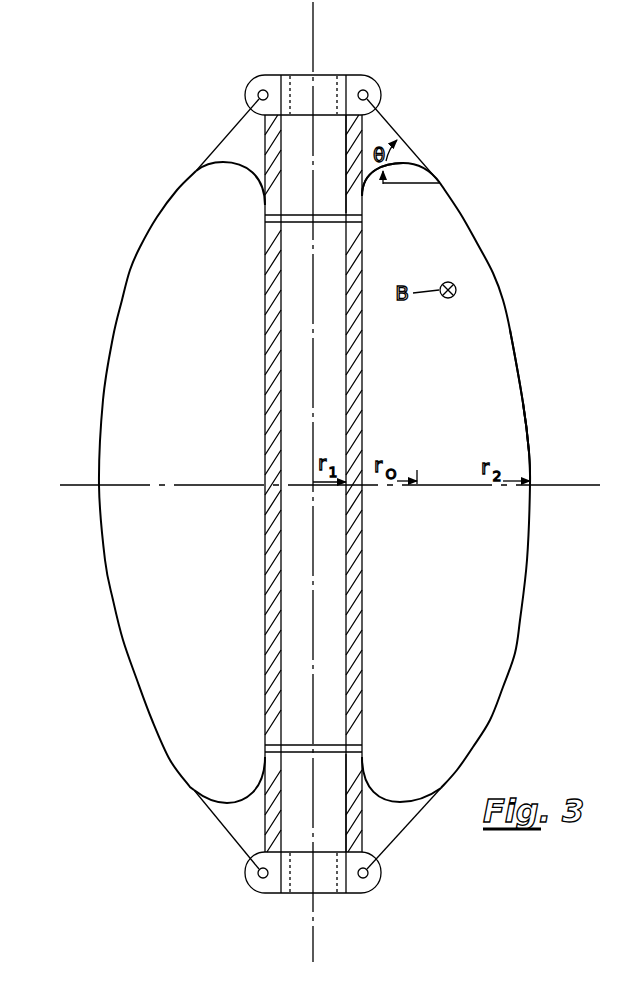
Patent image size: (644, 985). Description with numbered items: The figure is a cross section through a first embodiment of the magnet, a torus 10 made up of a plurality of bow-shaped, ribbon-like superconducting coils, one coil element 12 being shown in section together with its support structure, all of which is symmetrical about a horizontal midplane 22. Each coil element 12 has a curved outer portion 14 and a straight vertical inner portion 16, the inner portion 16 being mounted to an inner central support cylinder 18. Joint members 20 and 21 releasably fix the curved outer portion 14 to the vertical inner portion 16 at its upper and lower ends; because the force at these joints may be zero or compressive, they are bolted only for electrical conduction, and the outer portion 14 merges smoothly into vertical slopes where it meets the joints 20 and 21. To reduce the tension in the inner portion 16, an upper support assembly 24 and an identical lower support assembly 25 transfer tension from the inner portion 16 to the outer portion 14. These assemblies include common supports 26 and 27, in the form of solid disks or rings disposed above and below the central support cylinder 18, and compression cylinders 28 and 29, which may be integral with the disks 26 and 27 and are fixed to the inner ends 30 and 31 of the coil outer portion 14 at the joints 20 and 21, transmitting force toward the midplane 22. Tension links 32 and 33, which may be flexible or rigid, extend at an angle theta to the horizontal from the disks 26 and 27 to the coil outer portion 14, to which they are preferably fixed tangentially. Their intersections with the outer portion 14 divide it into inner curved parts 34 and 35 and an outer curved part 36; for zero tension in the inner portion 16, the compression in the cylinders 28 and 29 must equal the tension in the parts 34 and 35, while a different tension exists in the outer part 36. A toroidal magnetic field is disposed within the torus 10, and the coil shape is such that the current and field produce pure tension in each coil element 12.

The torus 10 is at (124, 264).
The coil element 12 is at (497, 263).
The curved outer portion 14 is at (524, 403).
The straight vertical inner portion 16 is at (362, 341).
The inner central support cylinder 18 is at (265, 339).
The joint member 20 is at (362, 221).
The joint member 21 is at (362, 745).
The horizontal midplane 22 is at (67, 483).
The upper support assembly 24 is at (378, 81).
The lower support assembly 25 is at (368, 894).
The common support 26 is at (290, 75).
The common support 27 is at (327, 893).
The compression cylinder 28 is at (347, 147).
The compression cylinder 29 is at (355, 800).
The inner end 30 is at (362, 216).
The inner end 31 is at (362, 752).
The tension link 32 is at (407, 163).
The tension link 33 is at (403, 833).
The inner curved part 34 is at (368, 180).
The inner curved part 35 is at (382, 794).
The outer curved part 36 is at (530, 452).